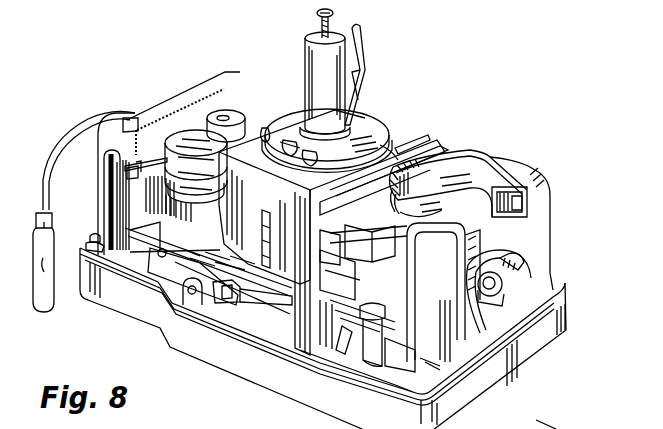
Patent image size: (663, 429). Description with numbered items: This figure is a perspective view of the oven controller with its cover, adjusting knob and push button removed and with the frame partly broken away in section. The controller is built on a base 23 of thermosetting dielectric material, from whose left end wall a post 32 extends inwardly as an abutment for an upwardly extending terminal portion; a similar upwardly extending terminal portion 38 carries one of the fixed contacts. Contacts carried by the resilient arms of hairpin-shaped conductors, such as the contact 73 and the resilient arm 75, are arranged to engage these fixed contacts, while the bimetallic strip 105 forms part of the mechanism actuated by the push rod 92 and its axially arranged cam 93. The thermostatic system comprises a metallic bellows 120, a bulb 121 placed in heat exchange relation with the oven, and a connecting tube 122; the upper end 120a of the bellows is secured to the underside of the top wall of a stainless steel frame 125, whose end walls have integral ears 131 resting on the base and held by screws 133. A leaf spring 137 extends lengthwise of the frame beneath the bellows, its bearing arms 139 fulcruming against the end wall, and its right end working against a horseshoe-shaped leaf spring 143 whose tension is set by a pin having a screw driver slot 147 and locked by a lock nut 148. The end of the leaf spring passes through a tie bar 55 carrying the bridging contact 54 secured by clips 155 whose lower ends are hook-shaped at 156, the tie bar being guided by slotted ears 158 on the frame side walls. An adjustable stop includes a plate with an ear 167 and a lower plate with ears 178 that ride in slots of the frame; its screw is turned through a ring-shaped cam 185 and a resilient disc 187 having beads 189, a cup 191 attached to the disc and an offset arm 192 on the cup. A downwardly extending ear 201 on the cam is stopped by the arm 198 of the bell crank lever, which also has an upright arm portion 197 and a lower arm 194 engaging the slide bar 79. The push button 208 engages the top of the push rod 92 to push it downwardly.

The base 23 is at (558, 315).
The push button 208 is at (556, 428).
The contact 73 is at (116, 268).
The bimetallic strip 105 is at (150, 282).
The connecting tube 122 is at (45, 188).
The bulb 121 is at (46, 272).
The screws 133 is at (92, 235).
The integral ear 131 is at (87, 249).
The post 32 is at (104, 207).
The metallic bellows 120 is at (180, 136).
The upper end of bellows 120a is at (232, 113).
The beads 189 is at (265, 126).
The bearing arms 139 is at (146, 180).
The leaf spring 137 is at (158, 167).
The cup 191 is at (310, 71).
The push rod 92 is at (318, 20).
The offset arm 192 is at (358, 31).
The resilient disc 187 is at (371, 123).
The ring shaped cam 185 is at (393, 150).
The ear 201 is at (416, 152).
The ears 178 is at (251, 237).
The ear 167 is at (273, 244).
The cam 93 is at (322, 276).
The frame 125 is at (462, 153).
The arm 198 is at (434, 147).
The horseshoe shaped leaf spring 143 is at (465, 202).
The tie bar 55 is at (508, 185).
The clips 155 is at (532, 180).
The ears 158 is at (400, 182).
The bridging contact 54 is at (432, 316).
The lock nut 148 is at (512, 262).
The screw driver slot 147 is at (512, 280).
The upwardly extending terminal portion 38 is at (170, 298).
The slide bar 79 is at (195, 306).
The upright arm portion 197 is at (222, 305).
The lower arm 194 is at (262, 322).
The hook-shaped end 156 is at (358, 371).
The resilient arm 75 is at (392, 344).